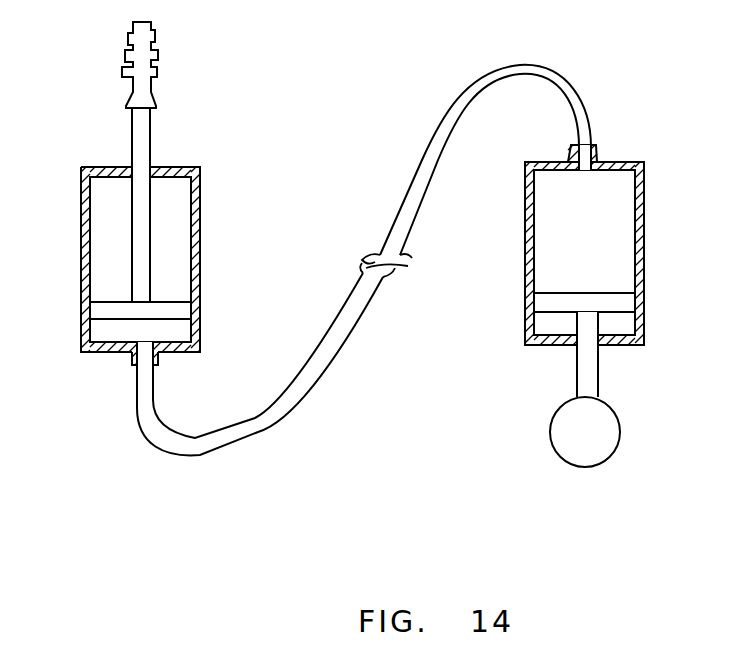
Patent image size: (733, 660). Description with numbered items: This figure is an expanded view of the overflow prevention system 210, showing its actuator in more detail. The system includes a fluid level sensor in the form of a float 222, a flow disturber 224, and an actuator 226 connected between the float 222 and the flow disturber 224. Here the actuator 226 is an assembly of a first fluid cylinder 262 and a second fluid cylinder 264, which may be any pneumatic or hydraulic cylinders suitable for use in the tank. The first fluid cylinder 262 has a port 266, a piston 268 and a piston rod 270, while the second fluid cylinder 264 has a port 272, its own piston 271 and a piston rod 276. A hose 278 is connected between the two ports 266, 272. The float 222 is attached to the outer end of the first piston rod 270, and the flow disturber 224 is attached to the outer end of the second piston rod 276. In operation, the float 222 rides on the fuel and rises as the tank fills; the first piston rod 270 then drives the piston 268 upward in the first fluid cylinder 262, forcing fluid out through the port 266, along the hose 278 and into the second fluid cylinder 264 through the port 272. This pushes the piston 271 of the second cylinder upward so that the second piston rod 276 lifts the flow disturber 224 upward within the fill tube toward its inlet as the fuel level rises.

The overflow prevention system 210 is at (393, 168).
The float 222 is at (608, 458).
The flow disturber 224 is at (160, 72).
The actuator 226 is at (362, 318).
The first fluid cylinder 262 is at (644, 240).
The second fluid cylinder 264 is at (80, 235).
The port 266 is at (598, 160).
The piston 268 is at (562, 293).
The piston rod 270 is at (600, 372).
The first piston 271 is at (112, 302).
The port 272 is at (132, 358).
The piston rod 276 is at (152, 148).
The hose 278 is at (295, 378).